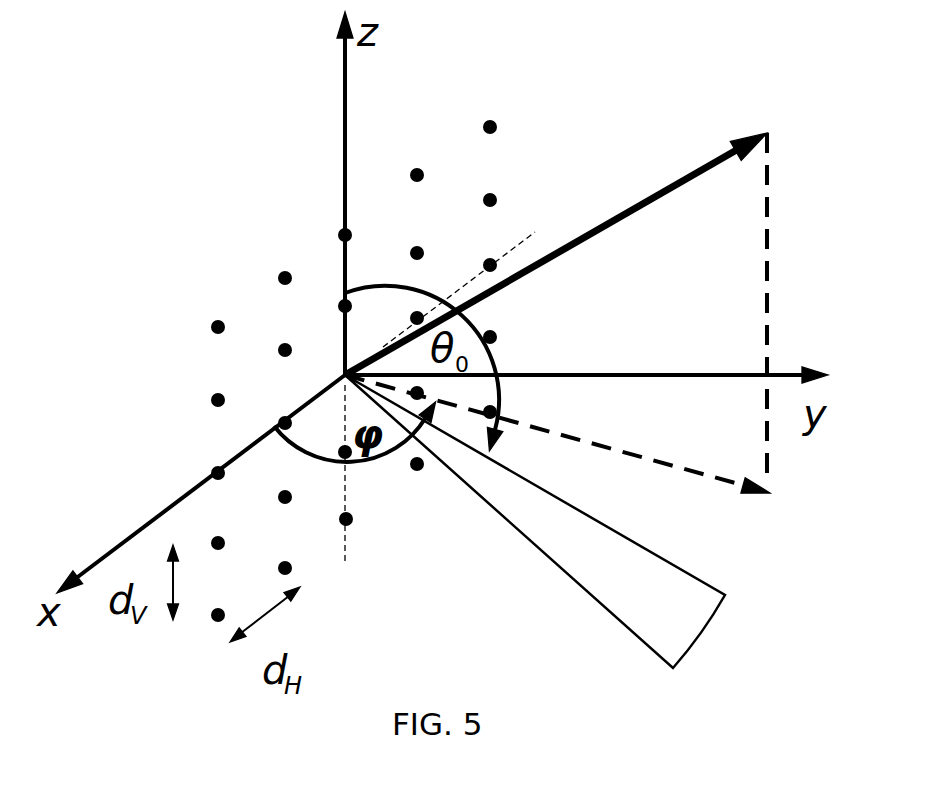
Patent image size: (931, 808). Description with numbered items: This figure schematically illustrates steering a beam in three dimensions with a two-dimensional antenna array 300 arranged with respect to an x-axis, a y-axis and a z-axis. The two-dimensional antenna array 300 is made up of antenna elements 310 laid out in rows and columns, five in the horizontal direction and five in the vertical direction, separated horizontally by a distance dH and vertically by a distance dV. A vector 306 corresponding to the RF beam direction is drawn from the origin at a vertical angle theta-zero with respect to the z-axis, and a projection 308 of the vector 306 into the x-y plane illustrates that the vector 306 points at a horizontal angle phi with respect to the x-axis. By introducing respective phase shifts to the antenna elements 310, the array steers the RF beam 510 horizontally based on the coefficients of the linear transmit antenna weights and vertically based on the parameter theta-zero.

The 2D antenna array 300 is at (209, 251).
The antenna elements 310 is at (494, 123).
The vector 306 is at (678, 182).
The projection 308 is at (702, 480).
The RF beam 510 is at (600, 605).